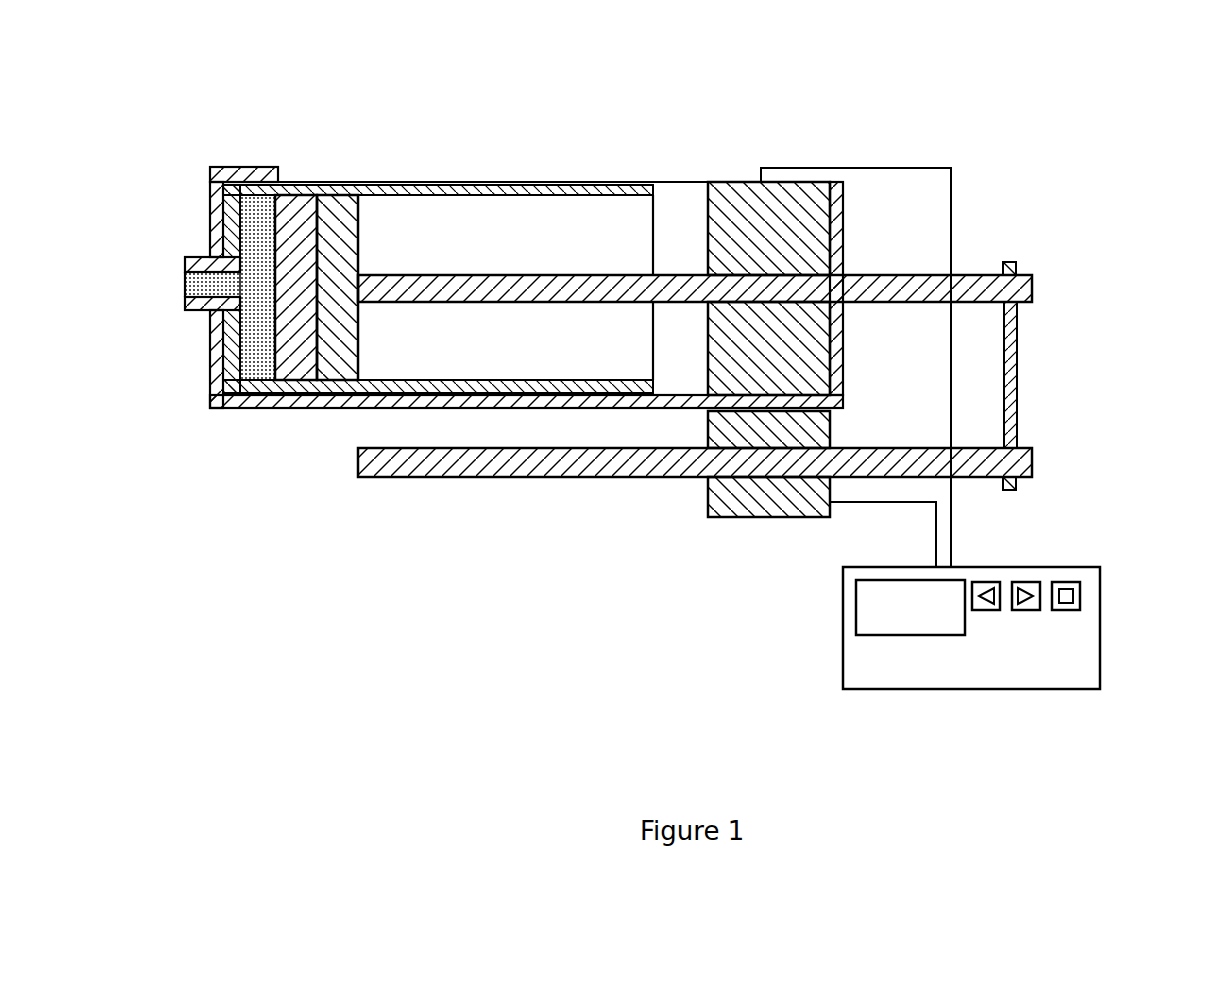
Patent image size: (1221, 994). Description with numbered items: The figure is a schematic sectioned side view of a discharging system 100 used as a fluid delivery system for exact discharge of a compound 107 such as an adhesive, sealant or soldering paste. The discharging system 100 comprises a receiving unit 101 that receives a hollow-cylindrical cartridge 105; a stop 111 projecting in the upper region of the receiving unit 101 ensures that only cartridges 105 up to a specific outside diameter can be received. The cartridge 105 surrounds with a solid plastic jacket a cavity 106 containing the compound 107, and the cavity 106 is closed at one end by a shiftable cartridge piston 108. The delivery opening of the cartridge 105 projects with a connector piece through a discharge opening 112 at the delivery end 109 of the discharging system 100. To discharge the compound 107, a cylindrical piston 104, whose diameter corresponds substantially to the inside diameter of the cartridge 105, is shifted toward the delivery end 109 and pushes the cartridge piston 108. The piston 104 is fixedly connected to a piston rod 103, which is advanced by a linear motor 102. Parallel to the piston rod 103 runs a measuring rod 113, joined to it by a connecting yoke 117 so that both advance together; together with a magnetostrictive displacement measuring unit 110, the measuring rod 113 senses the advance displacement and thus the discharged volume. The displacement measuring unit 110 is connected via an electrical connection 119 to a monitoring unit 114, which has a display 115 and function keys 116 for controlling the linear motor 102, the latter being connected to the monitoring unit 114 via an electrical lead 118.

The discharging system 100 is at (181, 110).
The receiving unit 101 is at (213, 222).
The linear motor 102 is at (732, 218).
The piston rod 103 is at (969, 285).
The piston 104 is at (333, 230).
The cartridge 105 is at (262, 383).
The cavity 106 is at (413, 357).
The compound 107 is at (248, 343).
The cartridge piston 108 is at (305, 370).
The delivery end 109 is at (166, 304).
The displacement measuring unit 110 is at (733, 510).
The stop 111 is at (248, 173).
The discharge opening 112 is at (219, 320).
The measuring rod 113 is at (569, 462).
The monitoring unit 114 is at (872, 685).
The display 115 is at (942, 630).
The function keys 116 is at (995, 607).
The connecting yoke 117 is at (1012, 265).
The electrical lead 118 is at (828, 168).
The electrical connection 119 is at (855, 503).